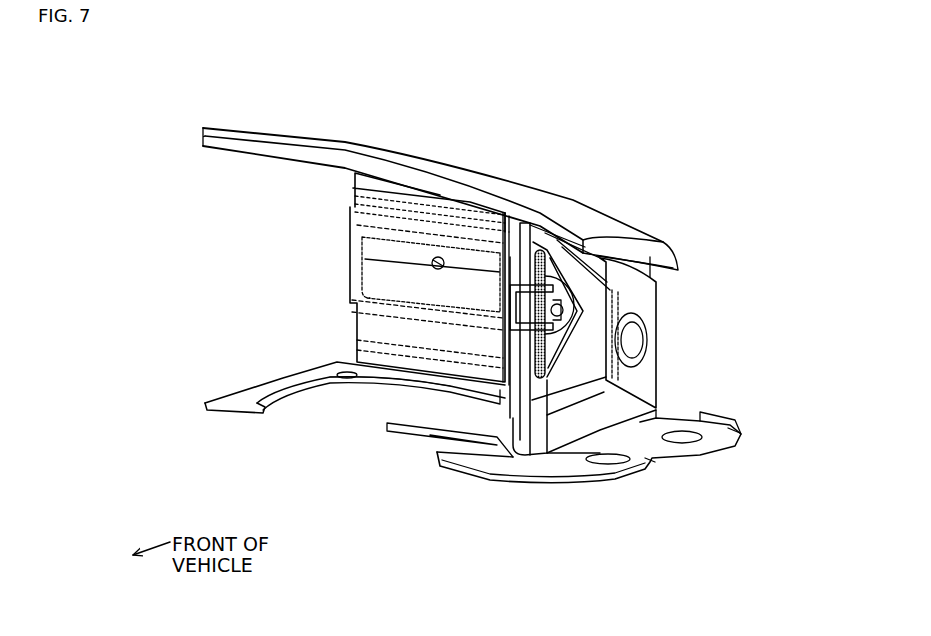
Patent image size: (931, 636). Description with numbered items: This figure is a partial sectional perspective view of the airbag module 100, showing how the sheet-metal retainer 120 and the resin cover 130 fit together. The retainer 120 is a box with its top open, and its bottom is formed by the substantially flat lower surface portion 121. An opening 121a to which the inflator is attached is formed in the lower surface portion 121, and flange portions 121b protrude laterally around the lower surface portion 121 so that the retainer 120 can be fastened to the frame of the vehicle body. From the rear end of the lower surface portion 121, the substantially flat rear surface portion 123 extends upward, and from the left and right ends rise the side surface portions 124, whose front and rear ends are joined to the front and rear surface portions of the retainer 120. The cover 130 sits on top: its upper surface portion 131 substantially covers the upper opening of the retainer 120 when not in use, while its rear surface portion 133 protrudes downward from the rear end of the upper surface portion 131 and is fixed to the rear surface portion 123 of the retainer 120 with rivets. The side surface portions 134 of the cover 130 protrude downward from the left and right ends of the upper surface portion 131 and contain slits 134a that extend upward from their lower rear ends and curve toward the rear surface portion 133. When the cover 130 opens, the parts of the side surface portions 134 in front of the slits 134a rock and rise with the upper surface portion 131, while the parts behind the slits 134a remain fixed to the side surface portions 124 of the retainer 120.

The airbag module 100 is at (153, 115).
The cover 130 is at (603, 113).
The upper surface portion 131 is at (449, 162).
The rear surface portion 133 is at (361, 183).
The rear surface portion 123 is at (359, 235).
The side surface portions 124 is at (432, 262).
The side surface portions 134 is at (609, 283).
The slits 134a is at (612, 326).
The retainer 120 is at (172, 424).
The lower surface portion 121 is at (282, 378).
The opening 121a is at (330, 416).
The flange portions 121b is at (687, 451).